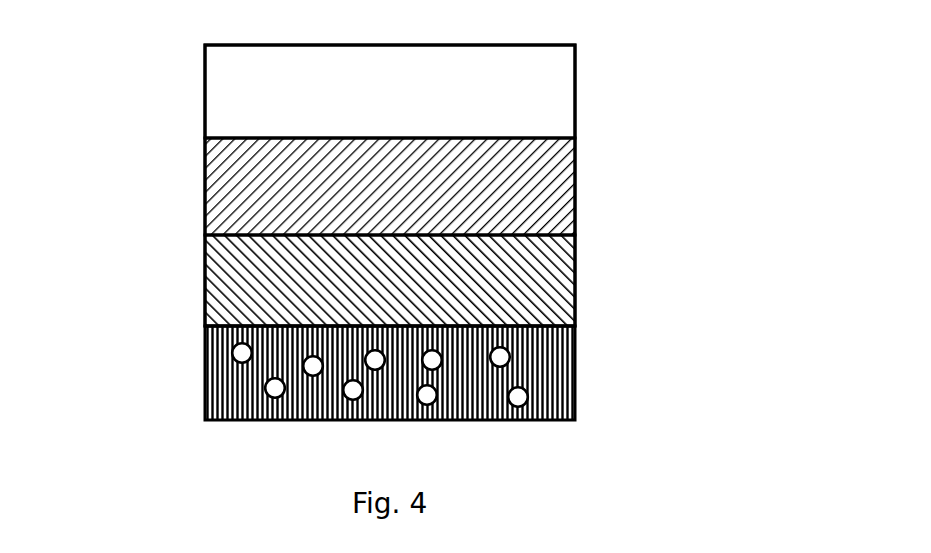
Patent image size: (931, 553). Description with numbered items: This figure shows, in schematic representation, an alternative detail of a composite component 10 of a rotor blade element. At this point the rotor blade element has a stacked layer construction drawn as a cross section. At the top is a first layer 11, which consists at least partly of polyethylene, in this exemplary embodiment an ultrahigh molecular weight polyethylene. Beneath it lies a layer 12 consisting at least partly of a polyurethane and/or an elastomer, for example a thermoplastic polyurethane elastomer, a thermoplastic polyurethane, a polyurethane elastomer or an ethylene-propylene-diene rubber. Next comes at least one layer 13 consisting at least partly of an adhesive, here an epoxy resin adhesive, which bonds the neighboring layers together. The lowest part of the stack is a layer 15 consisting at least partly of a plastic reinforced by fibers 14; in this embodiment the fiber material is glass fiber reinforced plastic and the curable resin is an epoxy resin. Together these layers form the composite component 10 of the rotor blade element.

The composite component 10 is at (175, 47).
The first layer 11 is at (543, 100).
The layer 12 is at (545, 190).
The layer 13 is at (545, 273).
The fibers 14 is at (578, 402).
The layer 15 is at (578, 376).